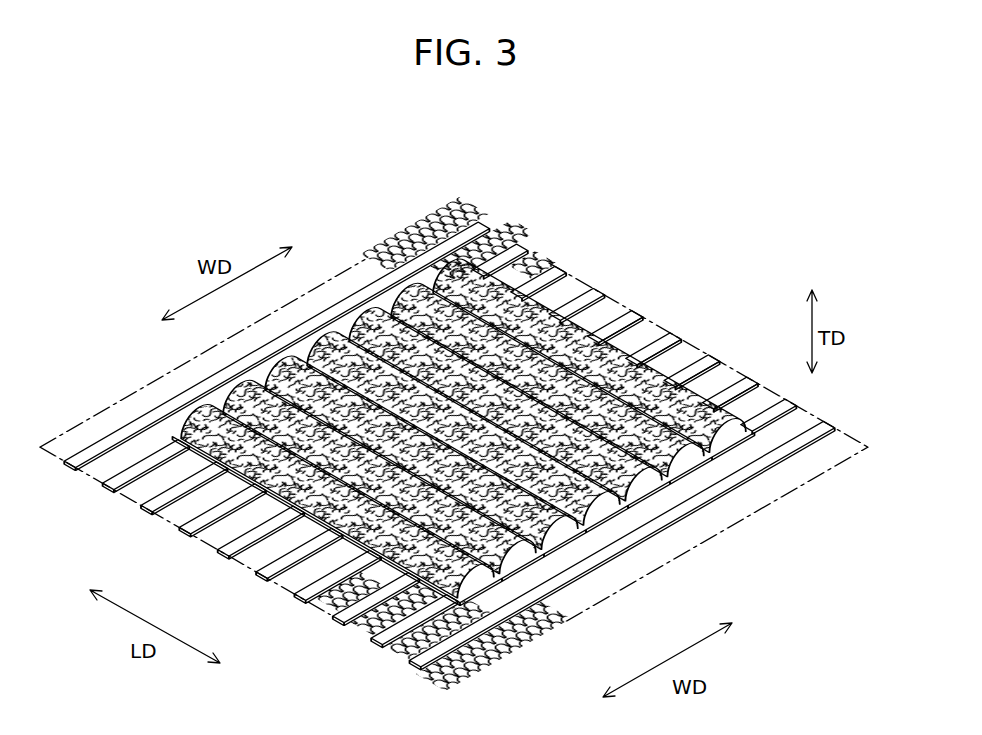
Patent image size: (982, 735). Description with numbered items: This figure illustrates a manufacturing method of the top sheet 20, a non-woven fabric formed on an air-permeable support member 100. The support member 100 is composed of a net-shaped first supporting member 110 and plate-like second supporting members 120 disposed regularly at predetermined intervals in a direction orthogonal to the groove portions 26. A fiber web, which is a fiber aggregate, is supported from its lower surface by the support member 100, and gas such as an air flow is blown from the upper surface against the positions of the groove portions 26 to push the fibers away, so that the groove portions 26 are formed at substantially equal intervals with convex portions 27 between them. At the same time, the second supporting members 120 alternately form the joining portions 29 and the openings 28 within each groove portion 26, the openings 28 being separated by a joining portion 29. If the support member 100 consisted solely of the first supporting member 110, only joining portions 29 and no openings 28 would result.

The support member 100 is at (492, 208).
The first supporting member 110 is at (514, 237).
The second supporting members 120 is at (267, 574).
The top sheet 20 is at (556, 321).
The groove portions 26 is at (683, 480).
The convex portions 27 is at (700, 468).
The openings 28 is at (617, 350).
The joining portion 29 is at (634, 353).